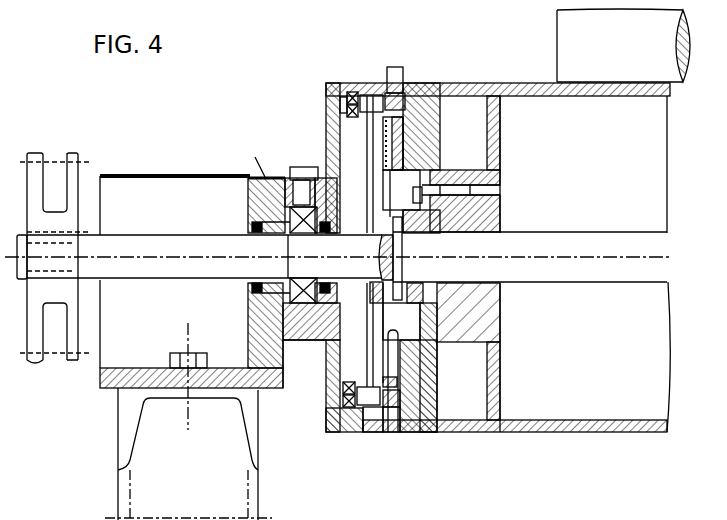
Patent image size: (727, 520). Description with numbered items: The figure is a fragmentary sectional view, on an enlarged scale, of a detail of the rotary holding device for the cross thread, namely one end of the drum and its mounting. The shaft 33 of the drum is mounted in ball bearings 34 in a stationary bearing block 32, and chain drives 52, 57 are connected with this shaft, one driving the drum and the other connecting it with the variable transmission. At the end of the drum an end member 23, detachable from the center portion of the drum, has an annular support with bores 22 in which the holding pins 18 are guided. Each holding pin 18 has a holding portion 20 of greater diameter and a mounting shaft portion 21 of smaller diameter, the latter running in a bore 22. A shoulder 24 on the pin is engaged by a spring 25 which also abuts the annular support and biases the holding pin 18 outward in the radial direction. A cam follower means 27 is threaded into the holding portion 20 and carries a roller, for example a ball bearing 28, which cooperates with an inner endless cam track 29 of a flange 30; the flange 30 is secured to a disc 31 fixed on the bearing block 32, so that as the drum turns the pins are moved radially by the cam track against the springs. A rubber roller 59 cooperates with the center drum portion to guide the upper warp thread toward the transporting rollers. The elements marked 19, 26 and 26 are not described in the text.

The holding pin 18 is at (395, 67).
The bolt 19 is at (377, 418).
The holding portion 20 is at (395, 82).
The mounting shaft portion 21 is at (433, 373).
The bore 22 is at (397, 334).
The end member 23 is at (437, 354).
The shoulder 24 is at (387, 383).
The spring 25 is at (383, 383).
The housing block 26 is at (403, 107).
The cam follower means 27 is at (368, 83).
The ball bearing 28 is at (340, 373).
The inner endless cam track 29 is at (328, 103).
The flange 30 is at (327, 430).
The disc 31 is at (326, 377).
The bearing block 32 is at (117, 389).
The shaft 33 is at (157, 250).
The ball bearings 34 is at (248, 213).
The chain drive 52 is at (40, 153).
The chain drive 57 is at (74, 153).
The rubber roller 59 is at (568, 42).